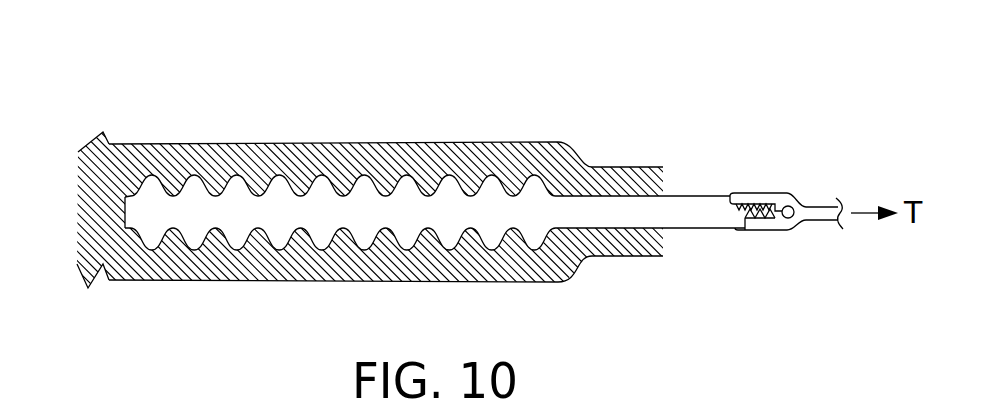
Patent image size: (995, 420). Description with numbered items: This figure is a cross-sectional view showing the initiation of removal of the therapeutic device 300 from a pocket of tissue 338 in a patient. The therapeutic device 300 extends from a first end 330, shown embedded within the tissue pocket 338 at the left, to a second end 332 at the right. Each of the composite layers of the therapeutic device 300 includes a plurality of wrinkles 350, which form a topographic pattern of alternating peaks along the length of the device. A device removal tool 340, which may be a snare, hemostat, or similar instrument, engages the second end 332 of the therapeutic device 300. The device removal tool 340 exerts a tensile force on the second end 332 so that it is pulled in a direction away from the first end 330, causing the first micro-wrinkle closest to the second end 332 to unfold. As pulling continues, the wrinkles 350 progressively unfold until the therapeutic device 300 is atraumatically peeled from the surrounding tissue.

The therapeutic device 300 is at (414, 168).
The first end 330 is at (127, 212).
The pocket of tissue 338 is at (86, 150).
The wrinkles 350 is at (525, 178).
The second end 332 is at (715, 194).
The device removal tool 340 is at (827, 206).